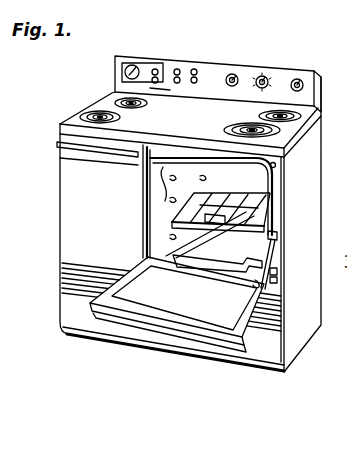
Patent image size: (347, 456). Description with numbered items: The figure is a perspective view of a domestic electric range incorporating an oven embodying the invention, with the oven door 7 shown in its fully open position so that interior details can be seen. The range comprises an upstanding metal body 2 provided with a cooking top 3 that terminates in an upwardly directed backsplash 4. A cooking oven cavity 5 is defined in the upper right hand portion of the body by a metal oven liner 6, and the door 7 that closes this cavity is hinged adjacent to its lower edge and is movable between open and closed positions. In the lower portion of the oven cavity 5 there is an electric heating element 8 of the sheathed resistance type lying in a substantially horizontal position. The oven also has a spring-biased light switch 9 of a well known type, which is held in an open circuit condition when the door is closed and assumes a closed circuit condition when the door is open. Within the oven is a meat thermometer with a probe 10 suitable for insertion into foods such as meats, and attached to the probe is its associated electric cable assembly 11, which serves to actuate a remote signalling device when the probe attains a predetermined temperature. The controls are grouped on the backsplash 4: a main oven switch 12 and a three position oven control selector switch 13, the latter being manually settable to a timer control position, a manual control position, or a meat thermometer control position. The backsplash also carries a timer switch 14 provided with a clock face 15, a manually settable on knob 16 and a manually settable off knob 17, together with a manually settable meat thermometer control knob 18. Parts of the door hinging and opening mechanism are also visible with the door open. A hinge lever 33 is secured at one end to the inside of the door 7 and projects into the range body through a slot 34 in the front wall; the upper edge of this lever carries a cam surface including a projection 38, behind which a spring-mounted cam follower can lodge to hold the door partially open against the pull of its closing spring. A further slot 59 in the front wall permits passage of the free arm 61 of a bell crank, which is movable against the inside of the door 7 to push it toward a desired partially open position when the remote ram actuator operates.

The metal body 2 is at (346, 139).
The cooking top 3 is at (200, 124).
The backsplash 4 is at (322, 88).
The cooking oven cavity 5 is at (183, 188).
The oven liner 6 is at (160, 232).
The door 7 is at (243, 330).
The electric heating element 8 is at (237, 264).
The light switch 9 is at (277, 165).
The probe 10 is at (212, 220).
The electric cable assembly 11 is at (164, 201).
The main oven switch 12 is at (235, 76).
The oven control selector switch 13 is at (266, 78).
The timer switch 14 is at (121, 73).
The clock face 15 is at (140, 68).
The on knob 16 is at (165, 70).
The off knob 17 is at (160, 89).
The meat thermometer control knob 18 is at (302, 81).
The hinge lever 33 is at (275, 251).
The slot 34 is at (278, 236).
The projection 38 is at (256, 283).
The slot 59 is at (278, 271).
The free arm 61 is at (278, 281).